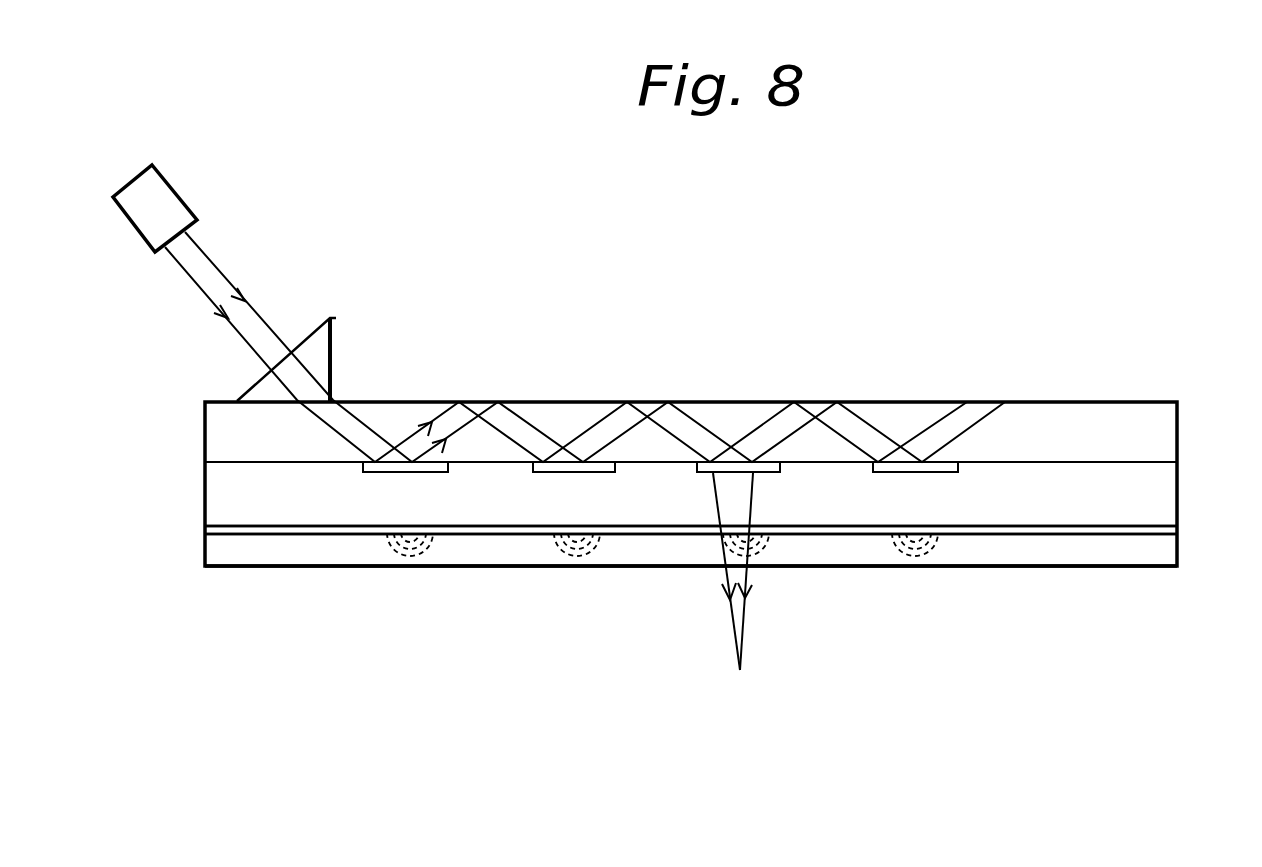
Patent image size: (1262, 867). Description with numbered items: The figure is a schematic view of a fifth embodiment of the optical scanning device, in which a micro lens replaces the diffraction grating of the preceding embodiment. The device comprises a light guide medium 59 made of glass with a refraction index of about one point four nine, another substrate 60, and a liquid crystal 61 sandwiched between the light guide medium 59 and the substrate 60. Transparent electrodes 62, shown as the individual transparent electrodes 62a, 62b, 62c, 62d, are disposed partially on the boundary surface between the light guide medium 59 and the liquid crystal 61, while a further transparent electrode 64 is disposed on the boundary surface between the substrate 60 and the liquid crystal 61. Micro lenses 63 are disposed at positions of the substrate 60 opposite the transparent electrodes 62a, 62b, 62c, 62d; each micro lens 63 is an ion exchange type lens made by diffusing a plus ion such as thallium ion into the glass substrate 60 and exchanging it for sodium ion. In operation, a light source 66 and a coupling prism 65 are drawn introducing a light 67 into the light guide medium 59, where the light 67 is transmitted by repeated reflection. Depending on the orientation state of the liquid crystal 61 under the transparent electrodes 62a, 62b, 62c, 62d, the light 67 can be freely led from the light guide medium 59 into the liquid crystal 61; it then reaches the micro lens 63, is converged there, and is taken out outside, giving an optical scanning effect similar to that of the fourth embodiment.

The light guide medium 59 is at (1157, 433).
The substrate 60 is at (1160, 553).
The liquid crystal 61 is at (1158, 497).
The transparent electrodes 62 is at (652, 617).
The transparent electrode 62a is at (438, 473).
The transparent electrode 62b is at (605, 473).
The transparent electrode 62c is at (775, 473).
The transparent electrode 62d is at (950, 473).
The micro lens 63 is at (387, 547).
The transparent electrode 64 is at (205, 533).
The prism 65 is at (318, 343).
The light source 66 is at (160, 198).
The light 67 is at (600, 420).